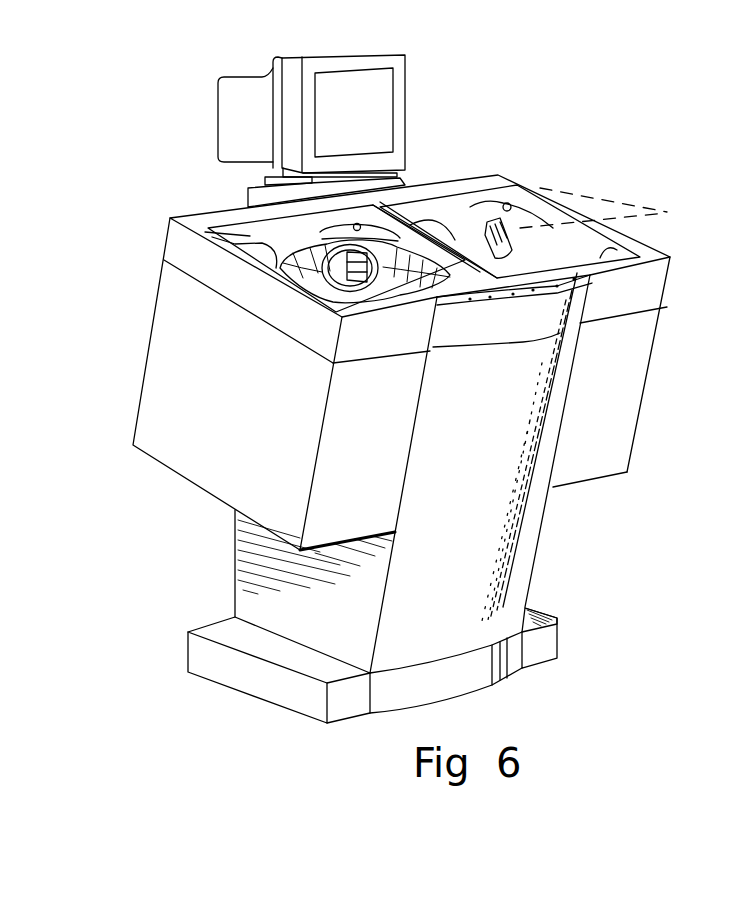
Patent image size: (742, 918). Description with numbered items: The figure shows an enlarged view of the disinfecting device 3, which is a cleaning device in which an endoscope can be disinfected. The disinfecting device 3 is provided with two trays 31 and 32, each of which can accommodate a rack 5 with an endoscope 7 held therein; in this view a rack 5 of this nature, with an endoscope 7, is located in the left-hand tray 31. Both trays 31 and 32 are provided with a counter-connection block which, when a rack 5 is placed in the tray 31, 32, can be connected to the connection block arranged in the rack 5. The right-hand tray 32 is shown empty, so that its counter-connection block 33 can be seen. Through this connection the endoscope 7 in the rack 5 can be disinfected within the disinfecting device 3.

The disinfecting device 3 is at (498, 168).
The tray 31 is at (206, 231).
The tray 32 is at (580, 243).
The counter-connection block 33 is at (510, 242).
The rack 5 is at (282, 268).
The endoscope 7 is at (333, 296).